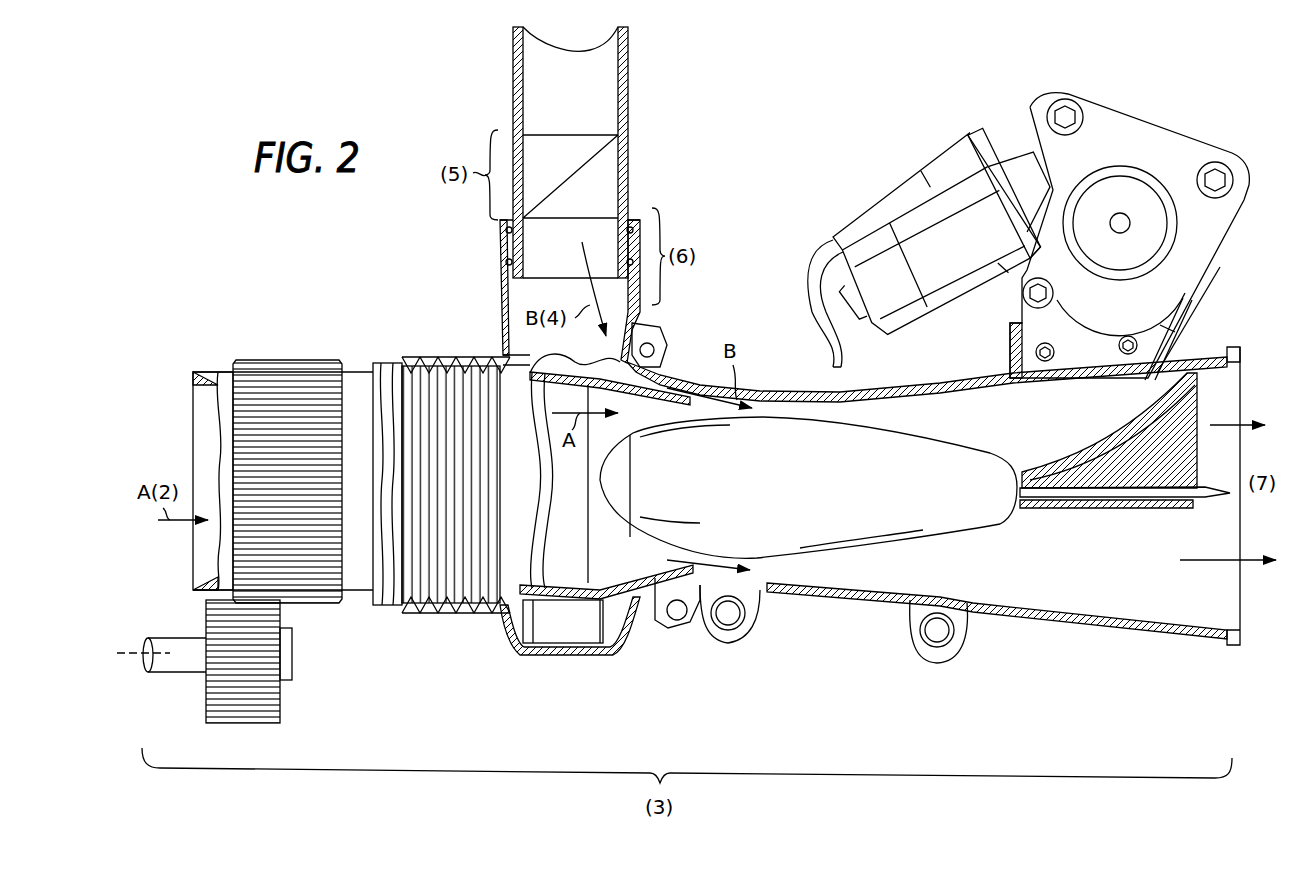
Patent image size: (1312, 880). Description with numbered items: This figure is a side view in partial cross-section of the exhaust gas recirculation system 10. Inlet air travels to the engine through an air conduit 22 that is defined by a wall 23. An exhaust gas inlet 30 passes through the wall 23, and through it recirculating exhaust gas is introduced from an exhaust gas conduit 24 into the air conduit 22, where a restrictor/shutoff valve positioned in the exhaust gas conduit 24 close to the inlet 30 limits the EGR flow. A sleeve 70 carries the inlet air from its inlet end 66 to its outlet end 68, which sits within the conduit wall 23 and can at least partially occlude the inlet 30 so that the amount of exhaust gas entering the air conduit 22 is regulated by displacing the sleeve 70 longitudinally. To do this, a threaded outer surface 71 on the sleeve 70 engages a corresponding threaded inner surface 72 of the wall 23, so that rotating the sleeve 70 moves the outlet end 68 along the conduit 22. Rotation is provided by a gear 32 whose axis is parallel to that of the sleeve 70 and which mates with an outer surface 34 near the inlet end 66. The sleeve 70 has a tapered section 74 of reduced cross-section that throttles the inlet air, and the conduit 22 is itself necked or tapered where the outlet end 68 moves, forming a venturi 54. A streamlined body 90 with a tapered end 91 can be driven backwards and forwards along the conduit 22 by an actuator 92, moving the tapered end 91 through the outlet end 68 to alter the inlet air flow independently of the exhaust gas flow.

The system 10 is at (458, 314).
The air conduit 22 is at (1132, 571).
The wall 23 is at (978, 387).
The exhaust gas conduit 24 is at (628, 171).
The exhaust gas inlet 30 is at (645, 328).
The gear 32 is at (258, 725).
The outer surface 34 is at (310, 605).
The venturi 54 is at (773, 570).
The inlet end 66 is at (193, 398).
The outlet end 68 is at (697, 405).
The sleeve 70 is at (358, 597).
The threaded outer surface 71 is at (387, 363).
The threaded inner surface 72 is at (442, 363).
The tapered section 74 is at (633, 593).
The streamlined body 90 is at (767, 526).
The tapered end 91 is at (603, 497).
The actuator 92 is at (1213, 148).